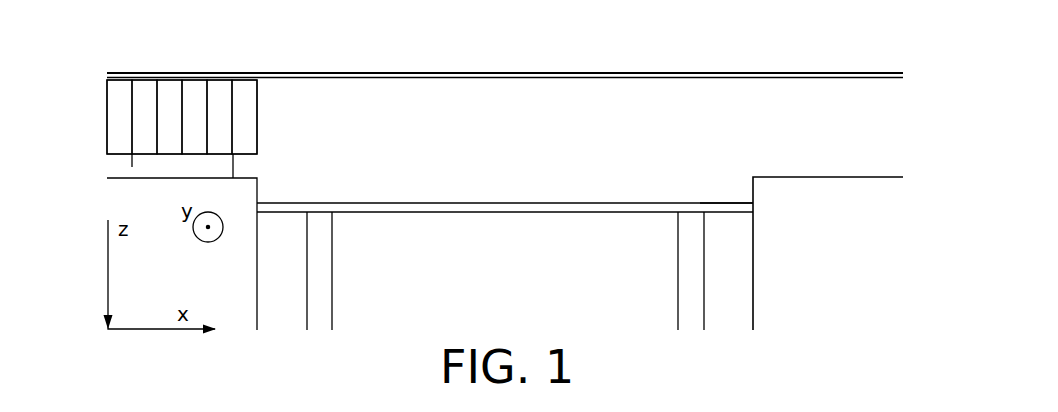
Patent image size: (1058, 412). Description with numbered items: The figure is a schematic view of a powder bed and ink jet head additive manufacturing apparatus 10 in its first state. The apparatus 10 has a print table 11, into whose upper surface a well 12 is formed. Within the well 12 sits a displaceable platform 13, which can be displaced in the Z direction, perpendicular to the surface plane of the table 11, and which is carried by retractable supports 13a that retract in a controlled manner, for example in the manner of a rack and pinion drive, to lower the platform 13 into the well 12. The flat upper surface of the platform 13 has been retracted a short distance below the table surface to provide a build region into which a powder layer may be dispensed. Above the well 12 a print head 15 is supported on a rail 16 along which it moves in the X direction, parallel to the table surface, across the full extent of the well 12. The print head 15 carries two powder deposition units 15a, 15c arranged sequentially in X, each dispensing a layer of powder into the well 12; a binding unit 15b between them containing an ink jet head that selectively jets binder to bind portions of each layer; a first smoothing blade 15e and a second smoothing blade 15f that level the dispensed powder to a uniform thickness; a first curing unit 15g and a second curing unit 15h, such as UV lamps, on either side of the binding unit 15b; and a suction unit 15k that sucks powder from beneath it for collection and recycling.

The additive manufacturing apparatus 10 is at (894, 63).
The print table 11 is at (785, 165).
The well 12 is at (723, 182).
The displaceable platform 13 is at (493, 231).
The retractable supports 13a is at (347, 257).
The print head 15 is at (221, 117).
The powder deposition unit 15a is at (119, 117).
The binding unit 15b is at (194, 117).
The powder deposition unit 15c is at (244, 117).
The first smoothing blade 15e is at (120, 166).
The second smoothing blade 15f is at (245, 168).
The first curing unit 15g is at (169, 117).
The second curing unit 15h is at (219, 117).
The suction unit 15k is at (144, 117).
The rail 16 is at (664, 66).